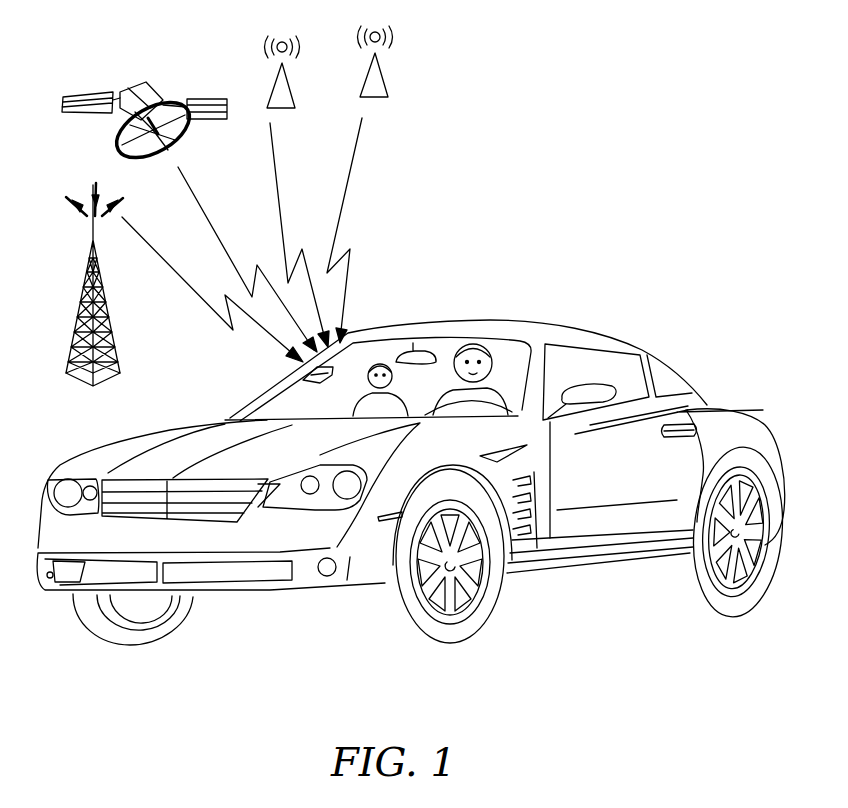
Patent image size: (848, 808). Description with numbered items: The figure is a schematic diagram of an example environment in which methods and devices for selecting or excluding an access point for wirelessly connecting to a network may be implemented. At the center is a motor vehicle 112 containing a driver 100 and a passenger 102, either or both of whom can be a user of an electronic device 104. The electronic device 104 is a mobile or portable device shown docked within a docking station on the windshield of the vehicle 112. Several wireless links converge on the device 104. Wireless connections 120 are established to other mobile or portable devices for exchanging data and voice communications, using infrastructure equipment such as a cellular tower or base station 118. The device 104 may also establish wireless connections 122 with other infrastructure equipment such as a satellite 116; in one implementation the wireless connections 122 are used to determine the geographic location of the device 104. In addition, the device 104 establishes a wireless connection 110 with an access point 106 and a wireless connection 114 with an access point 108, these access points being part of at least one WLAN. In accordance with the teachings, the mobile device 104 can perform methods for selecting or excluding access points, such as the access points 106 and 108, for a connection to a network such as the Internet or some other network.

The driver 100 is at (473, 343).
The passenger 102 is at (380, 363).
The electronic device 104 is at (298, 362).
The access point 106 is at (290, 85).
The access point 108 is at (383, 73).
The wireless connection 110 is at (280, 189).
The motor vehicle 112 is at (617, 333).
The wireless connection 114 is at (347, 197).
The satellite 116 is at (145, 82).
The cellular tower or base station 118 is at (77, 307).
The wireless connections 120 is at (158, 246).
The wireless connections 122 is at (207, 198).